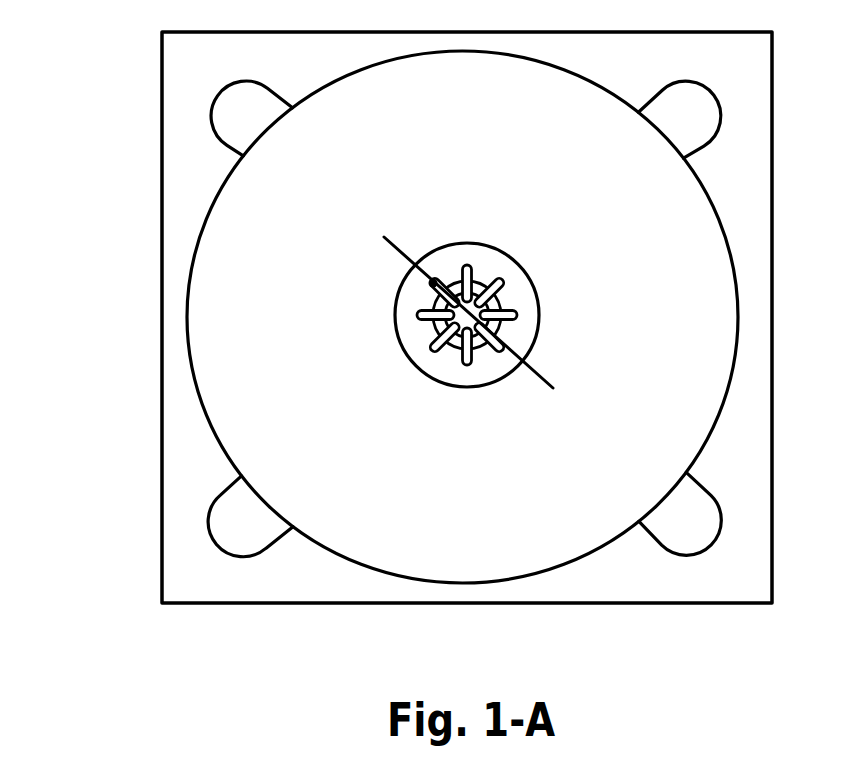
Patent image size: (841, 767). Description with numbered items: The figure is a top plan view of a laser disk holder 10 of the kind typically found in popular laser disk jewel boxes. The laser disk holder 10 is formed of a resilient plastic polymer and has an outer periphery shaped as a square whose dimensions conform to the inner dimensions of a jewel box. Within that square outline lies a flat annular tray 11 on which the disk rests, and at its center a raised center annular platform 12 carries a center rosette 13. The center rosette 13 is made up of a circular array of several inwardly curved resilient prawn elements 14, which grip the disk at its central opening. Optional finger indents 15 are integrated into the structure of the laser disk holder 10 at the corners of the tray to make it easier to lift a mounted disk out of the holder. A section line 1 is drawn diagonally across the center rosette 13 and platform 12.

The section line 1- 1 is at (395, 227).
The laser disk holder 10 is at (128, 180).
The flat annular tray 11 is at (306, 316).
The raised center annular platform 12 is at (421, 376).
The center rosette 13 is at (488, 357).
The resilient prawn elements 14 is at (483, 277).
The finger indents 15 is at (213, 552).